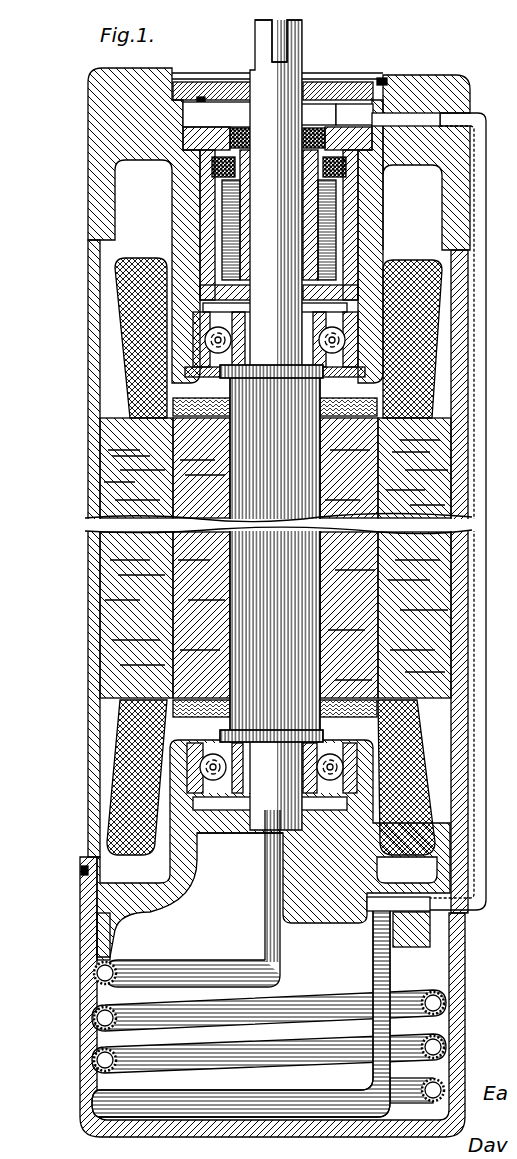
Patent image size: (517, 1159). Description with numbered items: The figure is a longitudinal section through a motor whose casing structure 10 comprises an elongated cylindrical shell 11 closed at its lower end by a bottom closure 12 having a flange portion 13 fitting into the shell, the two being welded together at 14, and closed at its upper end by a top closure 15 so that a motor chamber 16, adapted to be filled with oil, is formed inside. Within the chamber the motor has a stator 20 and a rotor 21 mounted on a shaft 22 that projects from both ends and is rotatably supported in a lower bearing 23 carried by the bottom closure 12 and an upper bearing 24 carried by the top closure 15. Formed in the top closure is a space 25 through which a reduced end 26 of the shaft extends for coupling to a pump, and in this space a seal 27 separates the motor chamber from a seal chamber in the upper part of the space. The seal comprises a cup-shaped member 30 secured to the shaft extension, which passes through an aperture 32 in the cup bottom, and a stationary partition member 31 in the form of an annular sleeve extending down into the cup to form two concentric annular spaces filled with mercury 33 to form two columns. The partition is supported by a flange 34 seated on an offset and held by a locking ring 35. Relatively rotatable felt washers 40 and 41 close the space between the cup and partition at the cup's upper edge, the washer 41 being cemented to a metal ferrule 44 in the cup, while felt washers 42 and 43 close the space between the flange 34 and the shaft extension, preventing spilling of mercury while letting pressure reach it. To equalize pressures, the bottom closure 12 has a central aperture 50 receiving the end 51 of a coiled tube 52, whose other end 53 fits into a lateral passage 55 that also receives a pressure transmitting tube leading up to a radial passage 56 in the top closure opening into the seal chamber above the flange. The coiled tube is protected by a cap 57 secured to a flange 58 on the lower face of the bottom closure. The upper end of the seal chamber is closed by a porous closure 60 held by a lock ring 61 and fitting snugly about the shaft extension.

The casing structure 10 is at (86, 238).
The cylindrical casing or shell 11 is at (98, 318).
The bottom closure or partition 12 is at (92, 905).
The flange portion 13 is at (97, 858).
The weld 14 is at (86, 876).
The cap structure or top closure 15 is at (100, 92).
The motor chamber 16 is at (100, 405).
The stator 20 is at (103, 575).
The rotor 21 is at (240, 580).
The shaft 22 is at (255, 617).
The bearing 23 is at (213, 770).
The bearing 24 is at (215, 338).
The space 25 is at (372, 205).
The reduced end of the shaft 26 is at (300, 48).
The seal 27 is at (234, 115).
The cup-shaped member 30 is at (350, 222).
The partition member 31 is at (340, 243).
The aperture 32 is at (303, 290).
The mercury 33 is at (310, 215).
The flange 34 is at (182, 125).
The locking ring 35 is at (201, 97).
The felt washer 40 is at (218, 114).
The felt washer 41 is at (214, 168).
The felt washer 42 is at (354, 113).
The felt washer 43 is at (318, 113).
The metal ferrule 44 is at (447, 468).
The central aperture 50 is at (280, 838).
The end of the coiled tube 51 is at (281, 897).
The coiled tube 52 is at (220, 972).
The end of the coiled tube 53 is at (377, 932).
The lateral passage 55 is at (398, 915).
The radial passage 56 is at (410, 117).
The cap 57 is at (80, 1010).
The flange 58 is at (100, 937).
The closure 60 is at (332, 88).
The lock ring 61 is at (383, 79).